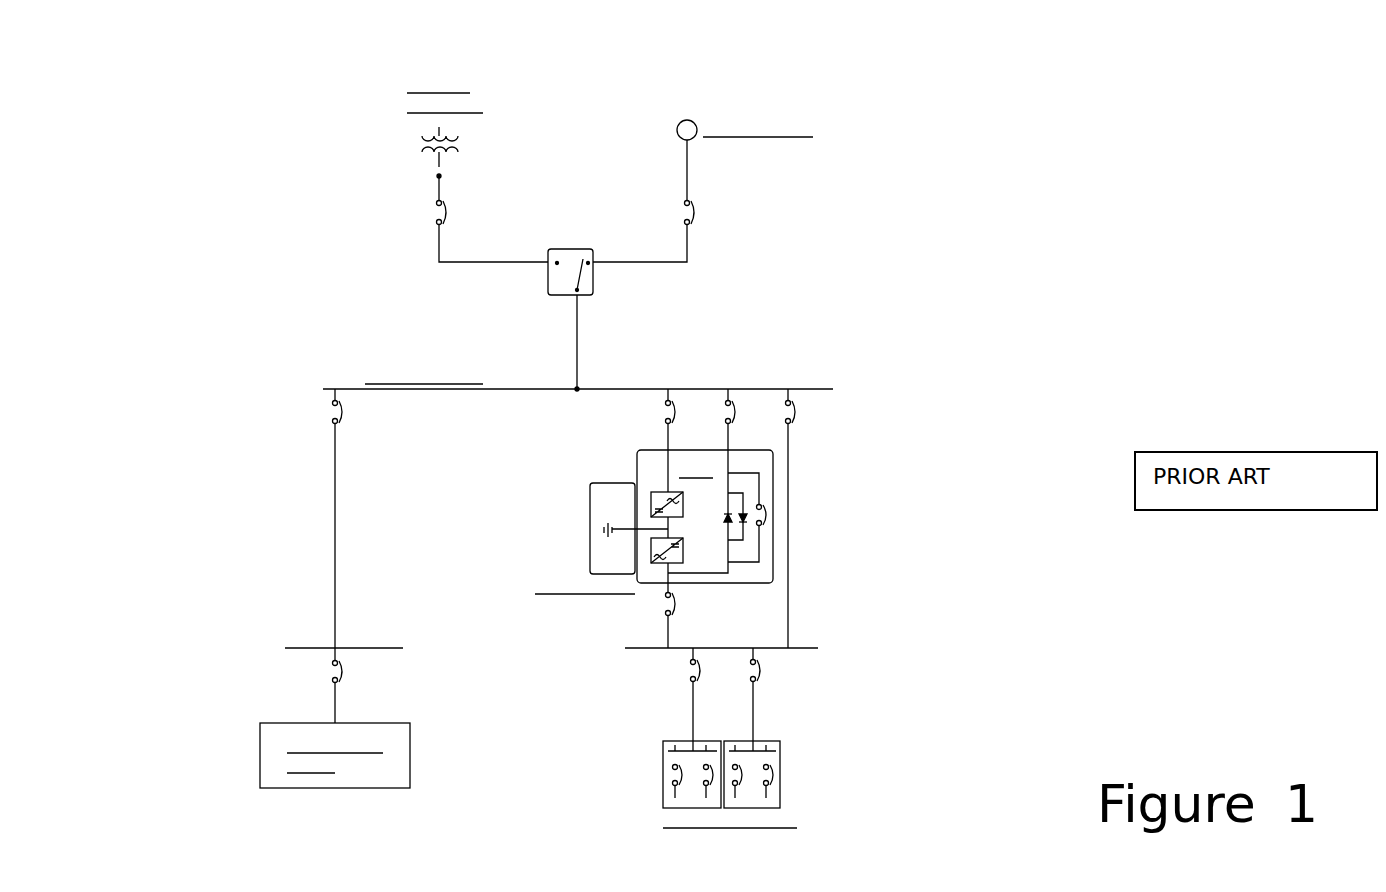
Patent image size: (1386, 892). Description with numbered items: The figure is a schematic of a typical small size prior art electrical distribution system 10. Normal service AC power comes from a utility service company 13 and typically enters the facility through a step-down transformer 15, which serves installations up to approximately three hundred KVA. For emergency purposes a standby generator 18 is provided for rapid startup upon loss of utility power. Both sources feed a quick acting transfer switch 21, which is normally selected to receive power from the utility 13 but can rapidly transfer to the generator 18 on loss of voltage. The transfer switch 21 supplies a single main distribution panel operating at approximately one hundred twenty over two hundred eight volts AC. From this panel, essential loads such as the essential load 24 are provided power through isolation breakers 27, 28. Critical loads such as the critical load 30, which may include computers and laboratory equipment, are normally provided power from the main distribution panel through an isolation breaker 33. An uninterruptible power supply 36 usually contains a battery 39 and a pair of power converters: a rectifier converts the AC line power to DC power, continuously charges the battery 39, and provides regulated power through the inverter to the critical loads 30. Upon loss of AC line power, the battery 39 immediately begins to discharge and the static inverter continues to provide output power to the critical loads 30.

The electrical distribution system 10 is at (913, 260).
The utility service company 13 is at (473, 83).
The step-down transformer 15 is at (415, 140).
The standby generator 18 is at (725, 110).
The transfer switch 21 is at (565, 253).
The essential load 24 is at (262, 747).
The isolation breaker 27 is at (332, 410).
The isolation breaker 28 is at (352, 672).
The critical load 30 is at (750, 828).
The isolation breaker 33 is at (805, 413).
The uninterruptible power supply 36 is at (647, 459).
The battery 39 is at (605, 503).